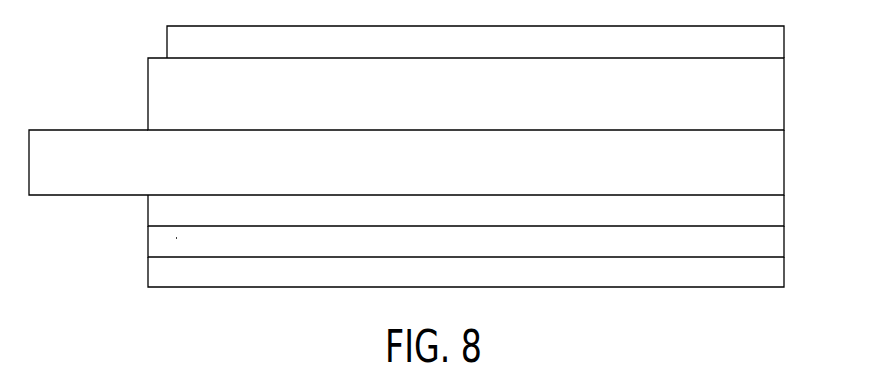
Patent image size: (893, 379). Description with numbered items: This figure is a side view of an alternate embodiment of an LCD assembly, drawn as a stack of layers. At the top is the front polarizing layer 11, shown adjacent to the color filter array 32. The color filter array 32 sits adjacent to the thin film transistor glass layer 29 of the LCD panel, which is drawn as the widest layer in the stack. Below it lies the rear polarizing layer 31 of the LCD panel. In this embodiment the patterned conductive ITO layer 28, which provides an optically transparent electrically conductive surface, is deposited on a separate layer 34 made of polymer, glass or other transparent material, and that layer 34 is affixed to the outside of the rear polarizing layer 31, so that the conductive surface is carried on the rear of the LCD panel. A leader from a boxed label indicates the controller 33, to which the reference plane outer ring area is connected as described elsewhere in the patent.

The front polarizing layer 11 is at (778, 38).
The color filter array 32 is at (778, 93).
The thin film transistor glass layer 29 is at (778, 163).
The rear polarizing layer 31 is at (778, 208).
The patterned conductive ITO layer 28 is at (778, 243).
The separate layer 34 is at (778, 274).
The controller 33 is at (177, 238).